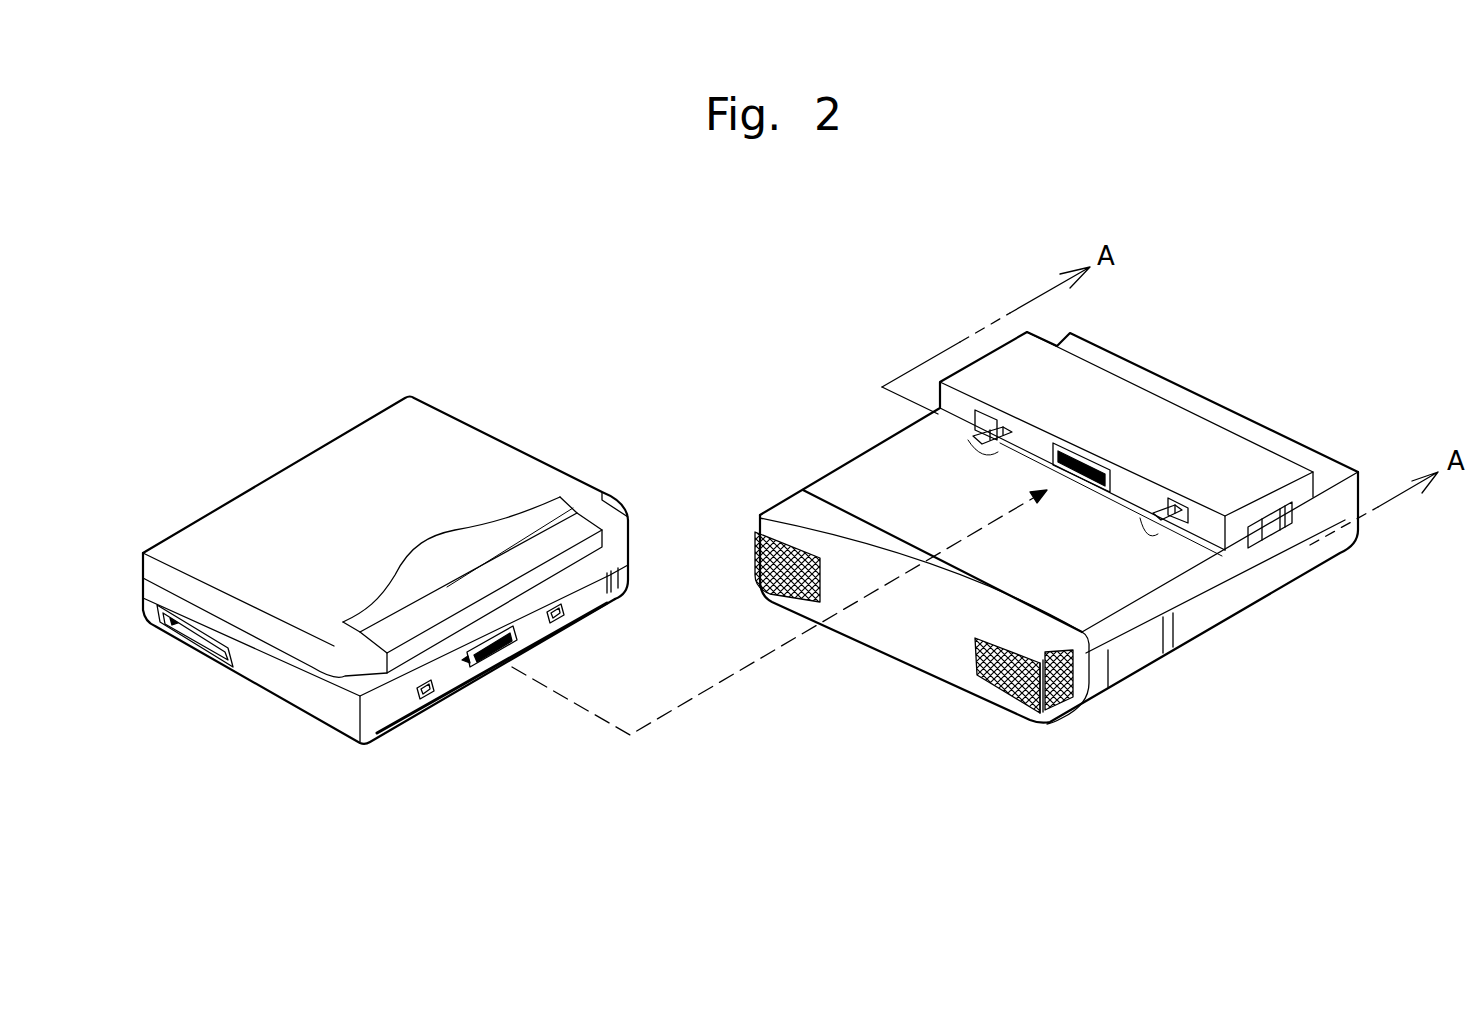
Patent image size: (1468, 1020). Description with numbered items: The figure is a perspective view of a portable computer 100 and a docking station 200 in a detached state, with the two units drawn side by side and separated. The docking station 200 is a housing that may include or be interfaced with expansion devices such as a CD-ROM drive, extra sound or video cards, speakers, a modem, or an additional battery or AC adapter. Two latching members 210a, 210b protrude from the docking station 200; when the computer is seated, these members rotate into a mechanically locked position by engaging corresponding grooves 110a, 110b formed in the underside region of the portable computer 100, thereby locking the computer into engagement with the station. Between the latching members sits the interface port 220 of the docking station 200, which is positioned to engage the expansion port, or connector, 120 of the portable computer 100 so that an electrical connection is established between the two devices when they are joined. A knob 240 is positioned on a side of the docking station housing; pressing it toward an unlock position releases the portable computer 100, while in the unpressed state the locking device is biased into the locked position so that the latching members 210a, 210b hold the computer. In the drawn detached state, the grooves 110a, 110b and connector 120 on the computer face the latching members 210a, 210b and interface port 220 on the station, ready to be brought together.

The portable computer 100 is at (393, 571).
The groove 110a is at (437, 695).
The groove 110b is at (570, 622).
The expansion port 120 is at (503, 668).
The docking station 200 is at (1064, 528).
The latching member 210a is at (1150, 527).
The latching member 210b is at (973, 435).
The interface port 220 is at (1077, 478).
The knob 240 is at (1277, 527).